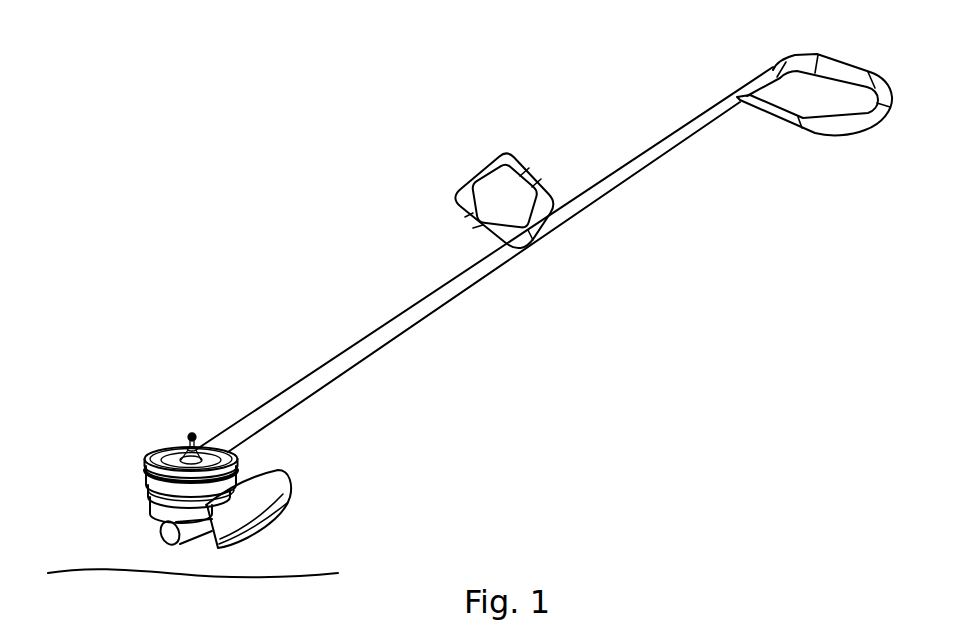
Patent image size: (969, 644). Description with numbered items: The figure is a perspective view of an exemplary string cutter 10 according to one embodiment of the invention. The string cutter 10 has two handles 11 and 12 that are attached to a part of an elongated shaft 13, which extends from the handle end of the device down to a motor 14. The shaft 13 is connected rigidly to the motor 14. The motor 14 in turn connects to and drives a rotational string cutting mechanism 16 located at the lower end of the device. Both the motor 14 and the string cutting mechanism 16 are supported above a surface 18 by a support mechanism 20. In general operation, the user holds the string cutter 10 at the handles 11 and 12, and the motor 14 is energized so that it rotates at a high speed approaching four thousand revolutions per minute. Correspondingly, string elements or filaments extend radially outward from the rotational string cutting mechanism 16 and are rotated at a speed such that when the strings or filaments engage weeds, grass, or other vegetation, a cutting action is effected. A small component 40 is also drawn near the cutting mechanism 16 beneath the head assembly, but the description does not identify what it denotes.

The string cutter 10 is at (793, 192).
The handle 11 is at (488, 168).
The handle 12 is at (827, 56).
The elongated shaft 13 is at (483, 281).
The motor 14 is at (153, 457).
The rotational string cutting mechanism 16 is at (150, 498).
The surface 18 is at (277, 575).
The support mechanism 20 is at (148, 483).
The line cutter / cylinder 40 is at (158, 537).